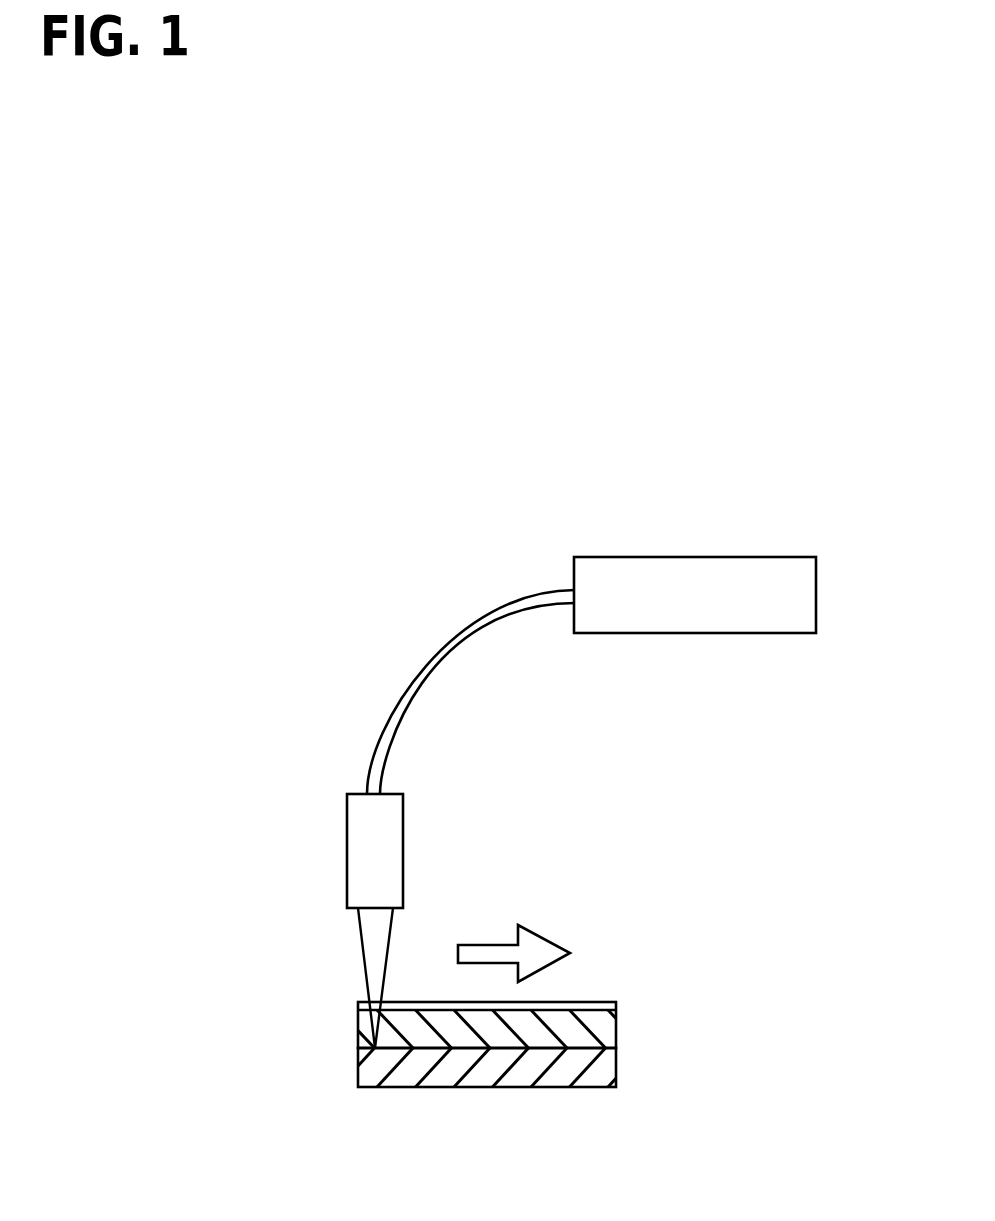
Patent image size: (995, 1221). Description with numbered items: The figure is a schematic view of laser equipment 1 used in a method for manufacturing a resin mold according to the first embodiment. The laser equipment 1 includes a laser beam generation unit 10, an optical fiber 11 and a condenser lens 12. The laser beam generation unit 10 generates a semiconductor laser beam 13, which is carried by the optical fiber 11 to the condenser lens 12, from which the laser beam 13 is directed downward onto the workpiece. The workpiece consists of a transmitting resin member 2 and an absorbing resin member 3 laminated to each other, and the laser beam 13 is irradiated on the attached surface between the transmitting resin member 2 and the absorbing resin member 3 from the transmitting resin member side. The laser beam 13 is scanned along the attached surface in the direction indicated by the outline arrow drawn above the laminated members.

The laser equipment 1 is at (400, 565).
The laser beam generation unit 10 is at (693, 557).
The optical fiber 11 is at (429, 652).
The condenser lens 12 is at (347, 853).
The semiconductor laser beam 13 is at (363, 978).
The transmitting resin member 2 is at (607, 1027).
The absorbing resin member 3 is at (610, 1072).